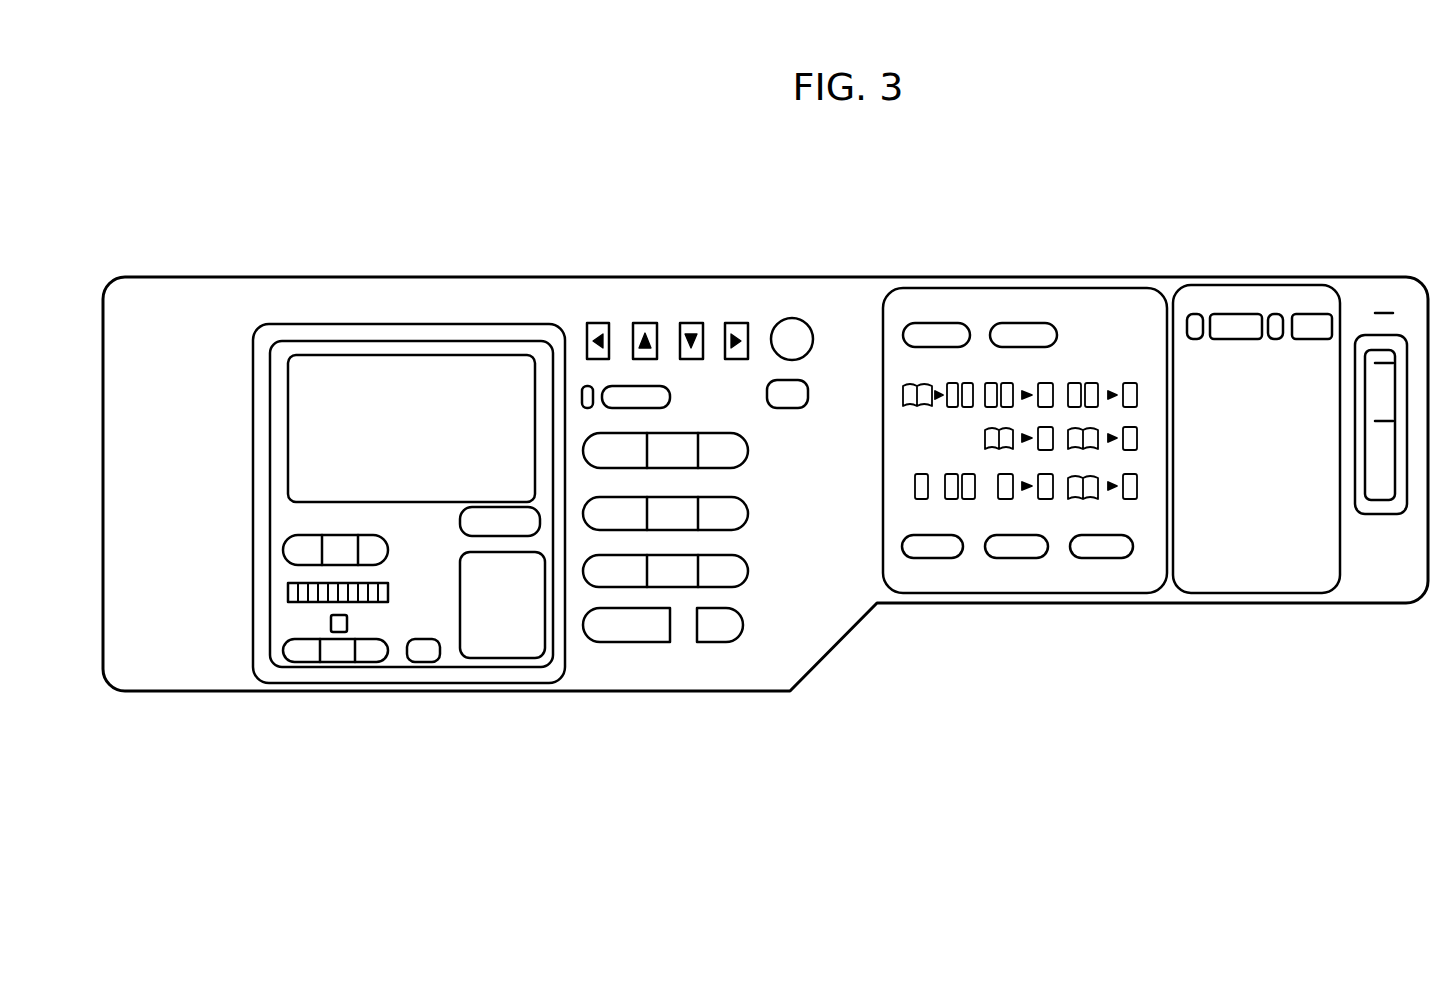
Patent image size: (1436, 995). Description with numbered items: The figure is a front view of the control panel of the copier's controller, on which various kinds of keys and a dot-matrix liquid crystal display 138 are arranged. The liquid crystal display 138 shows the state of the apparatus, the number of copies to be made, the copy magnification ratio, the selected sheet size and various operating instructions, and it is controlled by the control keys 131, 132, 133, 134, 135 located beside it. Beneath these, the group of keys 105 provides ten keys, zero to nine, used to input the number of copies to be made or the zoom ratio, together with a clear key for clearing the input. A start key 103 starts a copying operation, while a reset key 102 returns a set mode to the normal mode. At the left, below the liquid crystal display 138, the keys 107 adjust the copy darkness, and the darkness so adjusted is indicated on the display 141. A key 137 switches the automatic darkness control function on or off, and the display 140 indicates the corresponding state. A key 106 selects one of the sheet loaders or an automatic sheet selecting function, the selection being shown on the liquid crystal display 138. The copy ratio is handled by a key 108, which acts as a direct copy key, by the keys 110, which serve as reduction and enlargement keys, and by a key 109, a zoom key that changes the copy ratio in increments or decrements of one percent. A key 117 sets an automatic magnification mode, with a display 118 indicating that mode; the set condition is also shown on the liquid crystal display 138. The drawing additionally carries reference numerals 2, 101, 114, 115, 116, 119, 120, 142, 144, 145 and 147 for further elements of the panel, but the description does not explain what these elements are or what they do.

The operation panel section 2 is at (1292, 285).
The slide volume control 101 is at (1378, 500).
The reset key 102 is at (533, 525).
The start key 103 is at (508, 652).
The group of keys 105 is at (755, 427).
The key 106 is at (427, 660).
The keys 107 is at (308, 660).
The key 108 is at (339, 543).
The key 109 is at (1047, 323).
The keys 110 is at (375, 543).
The key 114 is at (1110, 558).
The key 115 is at (950, 558).
The key 116 is at (1025, 558).
The key 117 is at (1220, 314).
The display 118 is at (1193, 314).
The key 119 is at (1310, 314).
The key 120 is at (1273, 314).
The control key 131 is at (791, 318).
The control key 132 is at (597, 323).
The control key 133 is at (643, 323).
The control key 134 is at (695, 323).
The control key 135 is at (738, 323).
The key 137 is at (337, 660).
The liquid crystal display 138 is at (306, 368).
The display 140 is at (331, 623).
The display 141 is at (292, 592).
The display unit 142 is at (560, 421).
The key 144 is at (583, 388).
The key 145 is at (672, 397).
The key 147 is at (807, 388).